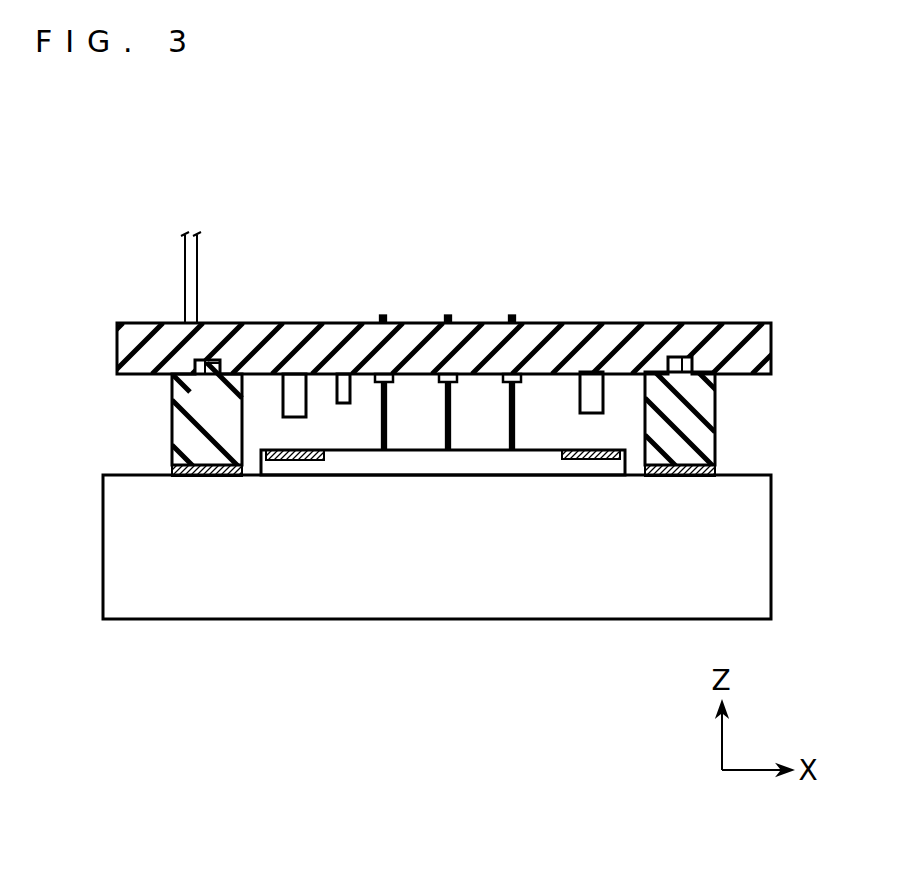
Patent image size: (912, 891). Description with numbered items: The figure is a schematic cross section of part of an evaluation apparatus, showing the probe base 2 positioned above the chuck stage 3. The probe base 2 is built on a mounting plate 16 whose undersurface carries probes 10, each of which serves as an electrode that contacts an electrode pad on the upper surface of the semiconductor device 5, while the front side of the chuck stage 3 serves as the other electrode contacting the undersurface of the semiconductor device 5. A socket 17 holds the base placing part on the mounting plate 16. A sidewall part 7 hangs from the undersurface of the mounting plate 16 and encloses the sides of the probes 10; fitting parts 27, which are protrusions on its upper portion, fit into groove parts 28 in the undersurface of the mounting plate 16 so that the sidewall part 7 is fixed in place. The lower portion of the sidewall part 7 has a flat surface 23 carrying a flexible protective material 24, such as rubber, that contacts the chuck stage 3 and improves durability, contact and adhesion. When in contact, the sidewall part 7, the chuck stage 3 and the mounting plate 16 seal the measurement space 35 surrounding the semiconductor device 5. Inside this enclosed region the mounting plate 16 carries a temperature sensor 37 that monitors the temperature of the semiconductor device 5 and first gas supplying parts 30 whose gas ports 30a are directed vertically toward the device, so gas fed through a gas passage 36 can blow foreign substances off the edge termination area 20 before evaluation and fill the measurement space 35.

The probe base 2 is at (442, 431).
The chuck stage 3 is at (115, 557).
The semiconductor device 5 is at (415, 462).
The sidewall part 7 is at (706, 395).
The probe 10 is at (516, 399).
The mounting plate 16 is at (760, 350).
The socket 17 is at (358, 368).
The edge termination area 20 is at (568, 450).
The flat surface 23 is at (209, 477).
The protective material 24 is at (174, 470).
The fitting part 27 is at (212, 358).
The groove part 28 is at (194, 366).
The first gas supplying part 30 is at (294, 388).
The gas port 30a is at (296, 460).
The measurement space 35 is at (632, 433).
The gas passage 36 is at (185, 287).
The temperature sensor 37 is at (346, 403).